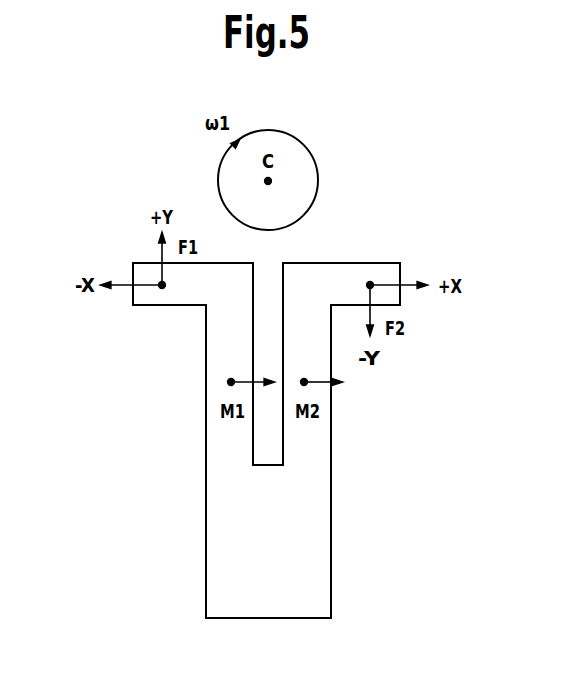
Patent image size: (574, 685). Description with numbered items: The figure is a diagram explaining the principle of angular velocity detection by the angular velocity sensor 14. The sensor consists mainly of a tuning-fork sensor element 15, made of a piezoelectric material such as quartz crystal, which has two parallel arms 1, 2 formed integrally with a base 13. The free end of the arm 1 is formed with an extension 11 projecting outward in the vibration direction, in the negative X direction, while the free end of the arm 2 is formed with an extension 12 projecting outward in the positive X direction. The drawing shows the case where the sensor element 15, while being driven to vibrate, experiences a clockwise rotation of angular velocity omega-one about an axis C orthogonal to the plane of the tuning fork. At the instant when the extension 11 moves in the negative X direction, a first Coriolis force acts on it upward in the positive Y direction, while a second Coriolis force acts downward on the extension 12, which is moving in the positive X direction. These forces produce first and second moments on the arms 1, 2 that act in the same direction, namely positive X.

The arm 1 is at (212, 354).
The arm 2 is at (322, 357).
The extension 11 is at (142, 298).
The extension 12 is at (333, 268).
The base 13 is at (318, 532).
The angular velocity sensor 14 is at (165, 518).
The tuning-fork sensor element 15 is at (331, 588).